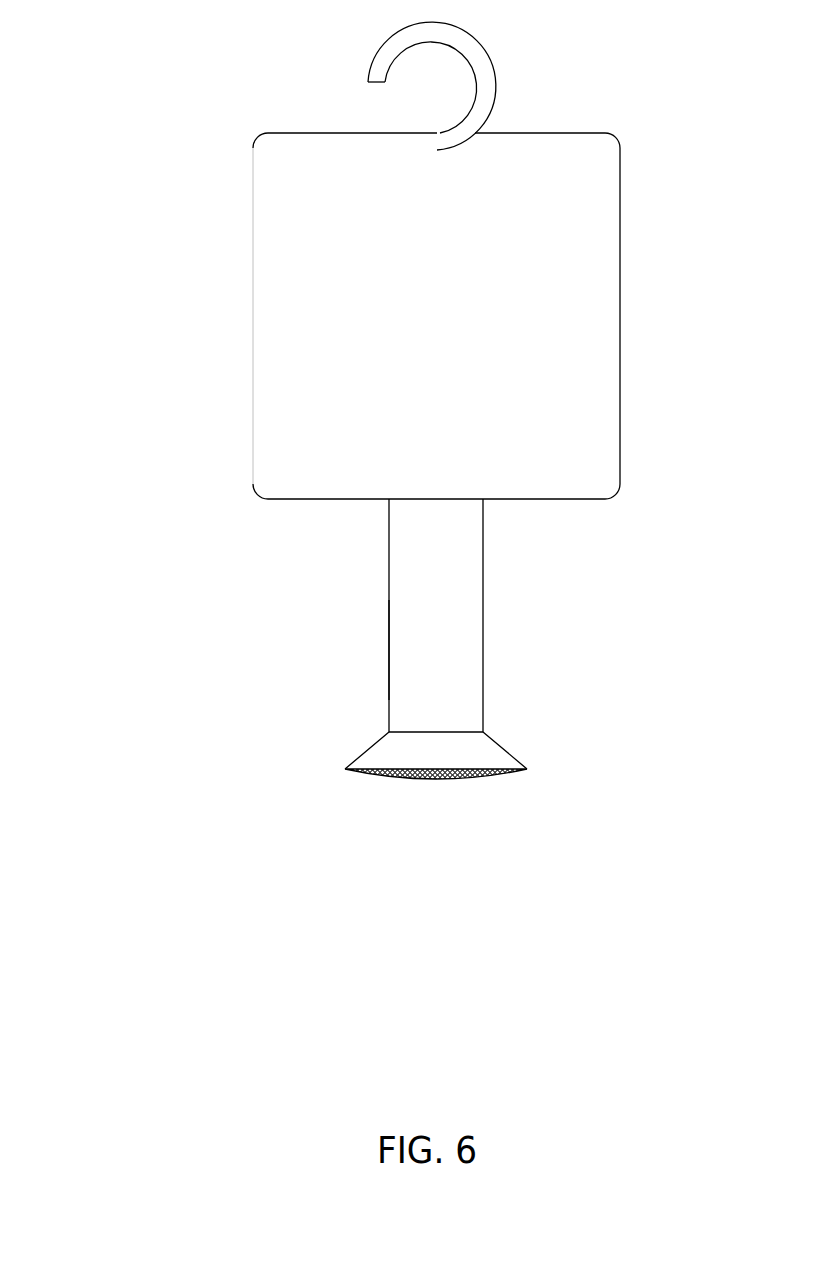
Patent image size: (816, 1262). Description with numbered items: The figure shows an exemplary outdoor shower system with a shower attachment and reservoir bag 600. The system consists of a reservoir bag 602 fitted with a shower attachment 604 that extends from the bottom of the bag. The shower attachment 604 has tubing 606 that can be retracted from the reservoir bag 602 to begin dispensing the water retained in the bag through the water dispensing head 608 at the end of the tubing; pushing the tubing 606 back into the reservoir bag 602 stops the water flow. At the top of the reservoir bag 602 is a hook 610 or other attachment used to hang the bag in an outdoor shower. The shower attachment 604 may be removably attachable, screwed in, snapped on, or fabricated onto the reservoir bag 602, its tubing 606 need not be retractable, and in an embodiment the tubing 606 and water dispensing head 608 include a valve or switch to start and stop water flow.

The system with a shower attachment and reservoir bag 600 is at (118, 898).
The reservoir bag 602 is at (278, 500).
The shower attachment 604 is at (485, 675).
The tubing 606 is at (389, 638).
The water dispensing head 608 is at (348, 771).
The hook 610 is at (367, 82).